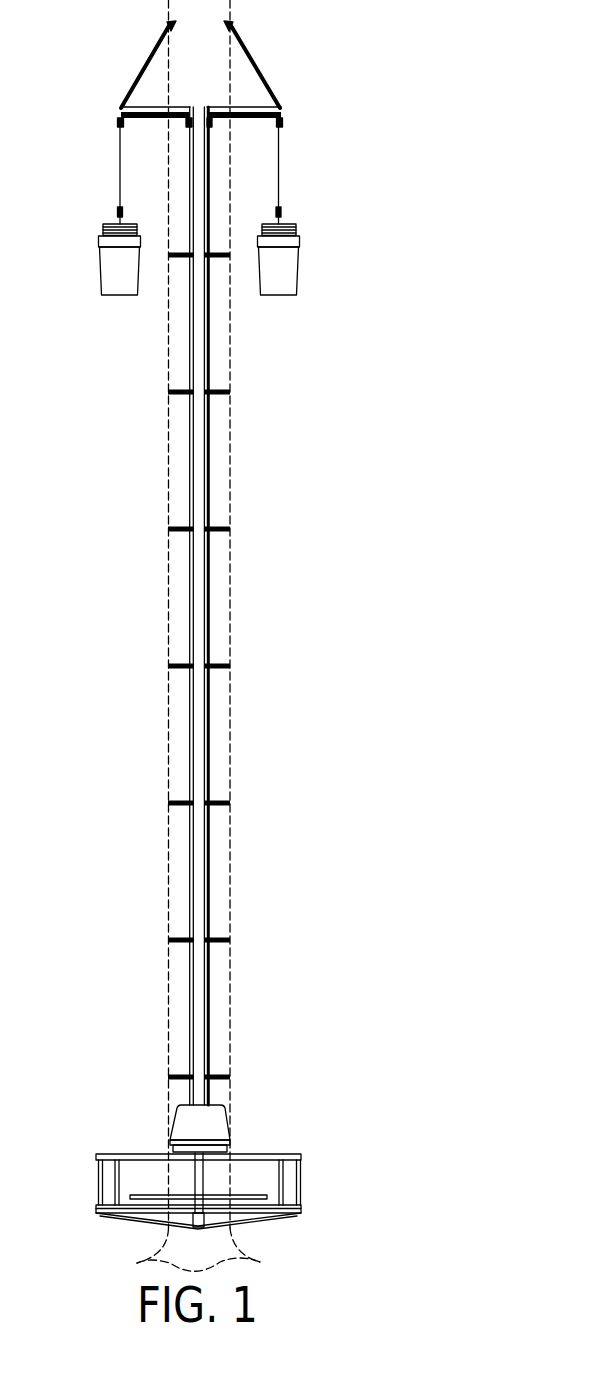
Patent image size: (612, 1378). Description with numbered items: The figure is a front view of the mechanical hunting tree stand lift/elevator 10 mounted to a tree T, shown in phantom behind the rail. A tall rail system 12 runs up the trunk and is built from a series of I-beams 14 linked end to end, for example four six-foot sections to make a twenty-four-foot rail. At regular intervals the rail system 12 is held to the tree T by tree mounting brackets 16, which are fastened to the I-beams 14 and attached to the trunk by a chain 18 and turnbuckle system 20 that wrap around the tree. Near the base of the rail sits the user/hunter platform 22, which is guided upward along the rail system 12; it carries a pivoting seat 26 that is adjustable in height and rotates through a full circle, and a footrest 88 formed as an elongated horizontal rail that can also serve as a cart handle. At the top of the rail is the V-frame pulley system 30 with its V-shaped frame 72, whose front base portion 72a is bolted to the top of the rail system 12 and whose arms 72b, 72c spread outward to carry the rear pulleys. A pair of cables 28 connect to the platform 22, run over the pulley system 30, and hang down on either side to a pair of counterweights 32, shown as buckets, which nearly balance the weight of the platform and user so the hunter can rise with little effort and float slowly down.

The mechanical hunting tree stand lift/elevator 10 is at (408, 220).
The rail system 12 is at (197, 737).
The I-beams 14 is at (198, 345).
The tree mounting brackets 16 is at (207, 666).
The chain 18 is at (207, 666).
The turnbuckle system 20 is at (228, 257).
The user/hunter platform 22 is at (97, 1208).
The pivoting seat 26 is at (215, 1122).
The cables 28 is at (119, 164).
The V-frame pulley system 30 is at (88, 98).
The counterweights 32 is at (113, 268).
The V-shaped frame 72 is at (177, 82).
The front base portion 72a is at (203, 107).
The arm 72b is at (252, 110).
The arm 72c is at (153, 110).
The footrest 88 is at (243, 1197).
The tree T is at (230, 450).